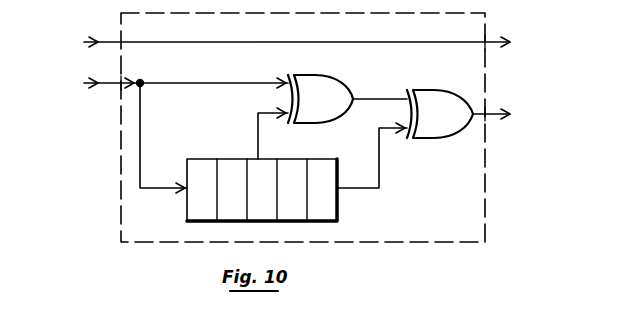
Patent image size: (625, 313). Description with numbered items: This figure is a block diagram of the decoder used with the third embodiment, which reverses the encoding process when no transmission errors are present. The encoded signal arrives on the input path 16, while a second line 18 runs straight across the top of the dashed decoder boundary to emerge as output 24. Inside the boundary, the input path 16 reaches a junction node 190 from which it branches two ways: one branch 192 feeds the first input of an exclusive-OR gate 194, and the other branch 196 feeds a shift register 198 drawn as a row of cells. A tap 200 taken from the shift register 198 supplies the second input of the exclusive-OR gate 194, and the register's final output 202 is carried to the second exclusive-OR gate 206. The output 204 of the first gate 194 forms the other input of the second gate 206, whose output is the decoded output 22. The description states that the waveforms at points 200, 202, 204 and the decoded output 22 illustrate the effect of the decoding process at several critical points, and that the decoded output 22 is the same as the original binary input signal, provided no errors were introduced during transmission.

The input path 16 is at (110, 81).
The input line 18 is at (112, 40).
The decoded output waveform 22 is at (492, 112).
The output line 24 is at (492, 40).
The junction node 190 is at (144, 86).
The line to exclusive-OR gate 192 is at (196, 81).
The exclusive-OR gate 194 is at (333, 77).
The line to shift register 196 is at (141, 143).
The shift register 198 is at (322, 221).
The waveform at a critical decoding point 200 is at (245, 136).
The waveform at a critical decoding point 202 is at (379, 140).
The waveform at a critical decoding point 204 is at (380, 103).
The exclusive-OR gate 206 is at (434, 92).